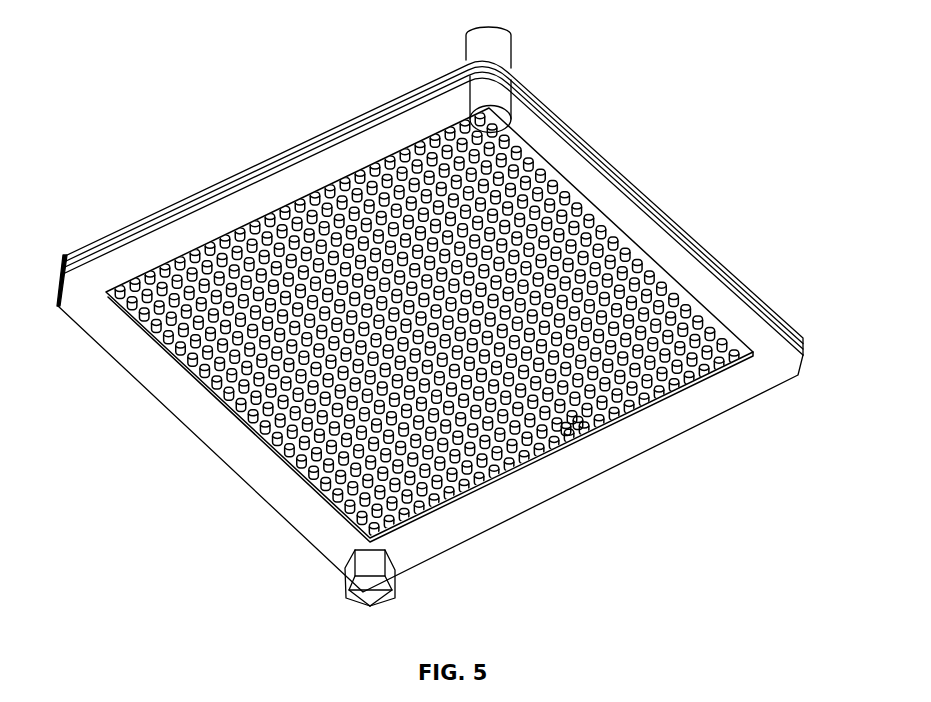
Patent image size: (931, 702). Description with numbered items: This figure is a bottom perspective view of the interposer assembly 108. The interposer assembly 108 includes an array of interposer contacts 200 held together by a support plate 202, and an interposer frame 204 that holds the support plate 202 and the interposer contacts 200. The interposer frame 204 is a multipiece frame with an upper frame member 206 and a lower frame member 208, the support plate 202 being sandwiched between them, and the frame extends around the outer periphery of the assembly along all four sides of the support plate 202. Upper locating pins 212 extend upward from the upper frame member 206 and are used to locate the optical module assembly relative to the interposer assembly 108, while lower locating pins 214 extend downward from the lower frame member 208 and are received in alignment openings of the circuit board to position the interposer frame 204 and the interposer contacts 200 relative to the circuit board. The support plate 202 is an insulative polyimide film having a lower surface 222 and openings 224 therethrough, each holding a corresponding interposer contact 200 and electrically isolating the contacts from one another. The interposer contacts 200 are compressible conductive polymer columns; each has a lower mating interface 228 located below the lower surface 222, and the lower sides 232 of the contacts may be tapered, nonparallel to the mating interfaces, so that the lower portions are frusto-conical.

The interposer assembly 108 is at (643, 107).
The interposer contacts 200 is at (650, 250).
The support plate 202 is at (687, 285).
The interposer frame 204 is at (717, 292).
The upper frame member 206 is at (143, 202).
The lower frame member 208 is at (130, 247).
The upper locating pins 212 is at (492, 35).
The lower locating pins 214 is at (492, 88).
The lower surface 222 is at (510, 465).
The openings 224 is at (742, 336).
The lower mating interface 228 is at (562, 427).
The lower sides 232 is at (563, 423).